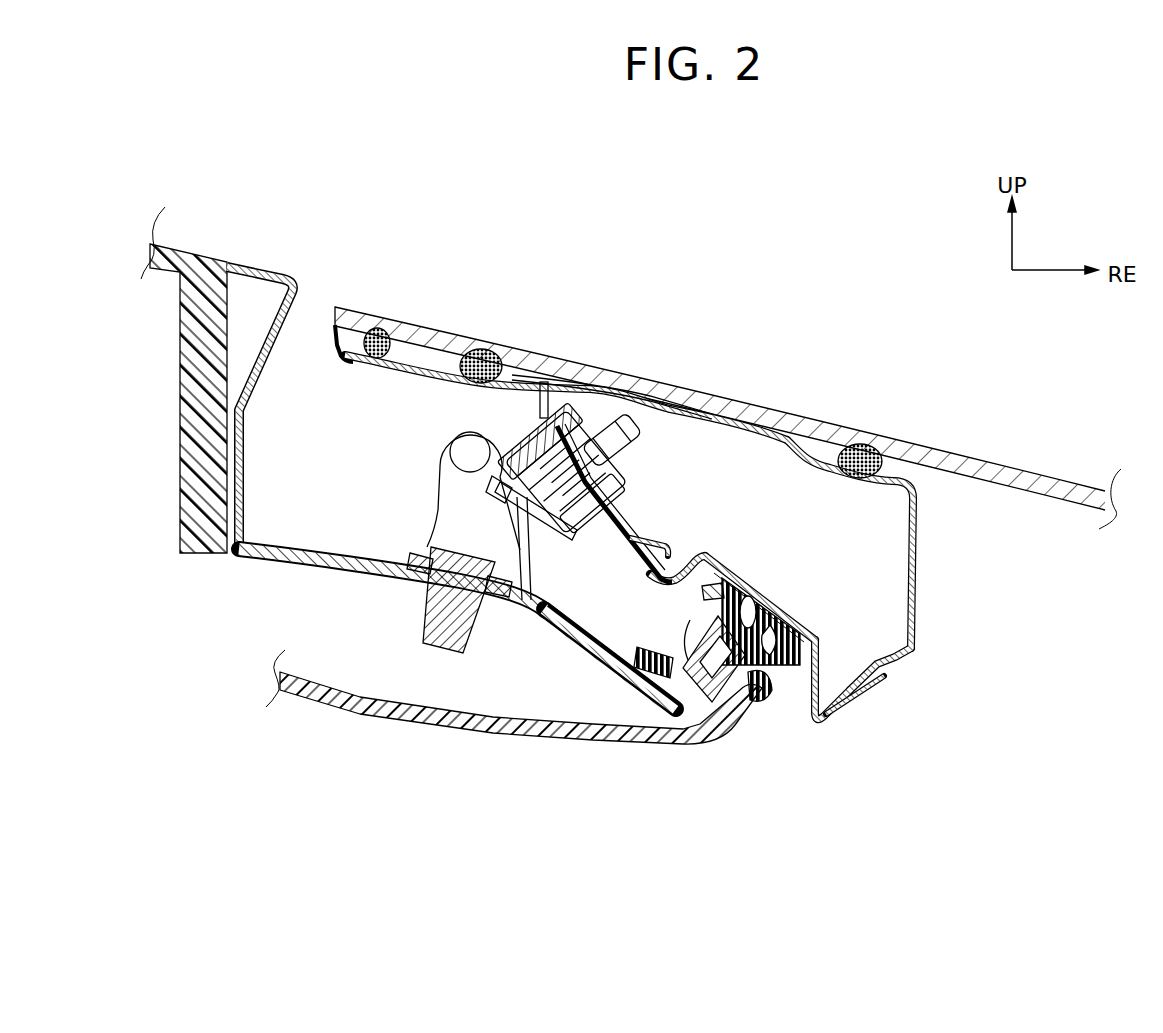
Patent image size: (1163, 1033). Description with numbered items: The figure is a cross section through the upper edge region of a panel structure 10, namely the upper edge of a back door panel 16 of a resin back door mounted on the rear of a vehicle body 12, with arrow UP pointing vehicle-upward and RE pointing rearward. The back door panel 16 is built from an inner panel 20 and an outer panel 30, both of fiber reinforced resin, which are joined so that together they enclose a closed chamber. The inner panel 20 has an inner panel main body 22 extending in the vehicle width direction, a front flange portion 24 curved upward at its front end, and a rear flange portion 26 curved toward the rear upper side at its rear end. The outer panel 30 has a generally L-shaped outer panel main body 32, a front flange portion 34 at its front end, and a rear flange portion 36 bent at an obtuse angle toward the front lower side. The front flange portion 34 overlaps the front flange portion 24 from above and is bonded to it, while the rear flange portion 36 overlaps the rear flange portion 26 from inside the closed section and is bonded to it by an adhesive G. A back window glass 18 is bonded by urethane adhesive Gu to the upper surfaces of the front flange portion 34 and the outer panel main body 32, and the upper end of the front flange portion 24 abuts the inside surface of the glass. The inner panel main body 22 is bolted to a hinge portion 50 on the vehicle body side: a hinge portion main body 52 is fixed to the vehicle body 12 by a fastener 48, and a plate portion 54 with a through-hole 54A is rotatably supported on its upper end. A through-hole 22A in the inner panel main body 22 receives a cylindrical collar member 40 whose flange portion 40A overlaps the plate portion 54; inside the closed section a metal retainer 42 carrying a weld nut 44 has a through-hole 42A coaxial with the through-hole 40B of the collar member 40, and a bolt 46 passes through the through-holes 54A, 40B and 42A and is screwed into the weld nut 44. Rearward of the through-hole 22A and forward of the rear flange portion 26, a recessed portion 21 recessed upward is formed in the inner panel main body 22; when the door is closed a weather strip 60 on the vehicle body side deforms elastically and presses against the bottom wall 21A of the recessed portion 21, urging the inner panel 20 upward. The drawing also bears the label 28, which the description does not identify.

The panel structure 10 is at (907, 677).
The vehicle body 12 is at (275, 271).
The back door panel 16 is at (933, 587).
The back window glass 18 is at (981, 462).
The inner panel 20 is at (641, 596).
The recessed portion 21 is at (803, 634).
The bottom wall 21A is at (712, 573).
The inner panel main body 22 is at (640, 566).
The through-hole 22A is at (650, 540).
The front flange portion 24 is at (333, 337).
The rear flange portion 26 is at (868, 682).
The bottom wall portion 28 is at (817, 728).
The outer panel 30 is at (726, 425).
The outer panel main body 32 is at (807, 457).
The front flange portion 34 is at (430, 368).
The rear flange portion 36 is at (838, 697).
The cylindrical collar member 40 is at (570, 390).
The flange portion 40A is at (523, 427).
The through-hole 40B is at (624, 476).
The metal retainer 42 is at (682, 562).
The through-hole 42A is at (594, 392).
The weld nut 44 is at (667, 385).
The bolt 46 is at (530, 602).
The fastener 48 is at (423, 607).
The hinge portion 50 is at (437, 503).
The hinge portion main body 52 is at (446, 480).
The plate portion 54 is at (582, 534).
The through-hole 54A is at (497, 483).
The weather strip 60 is at (717, 593).
The urethane adhesive Gu is at (412, 322).
The adhesive G is at (854, 708).